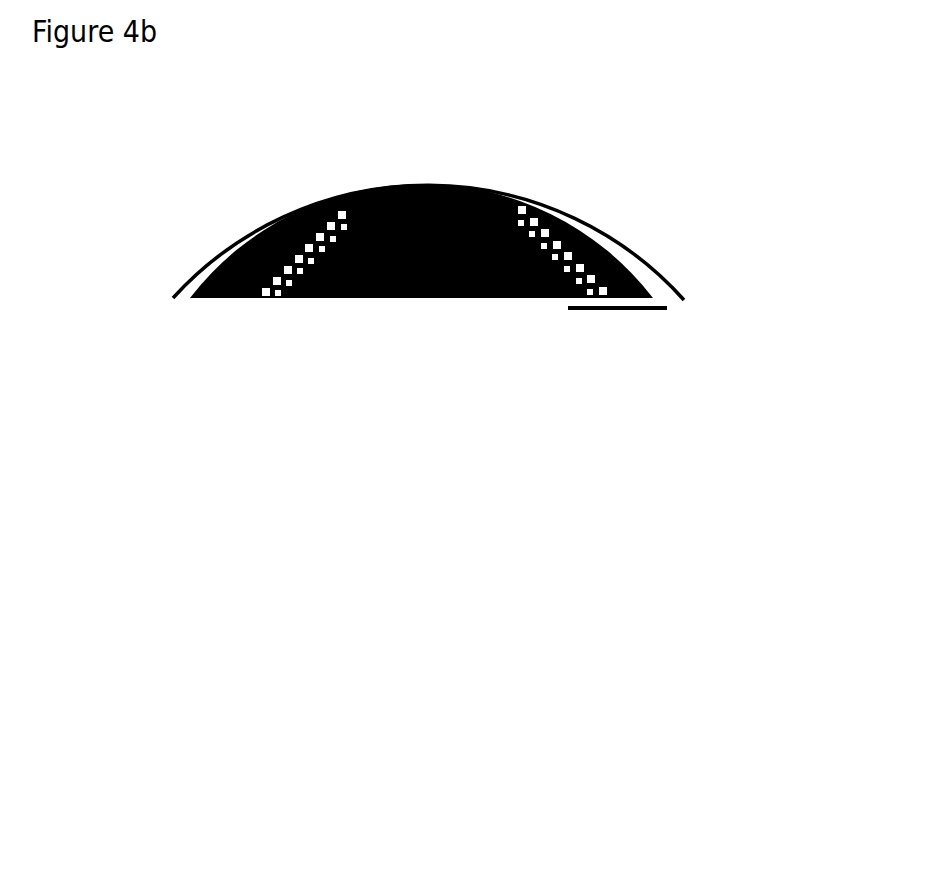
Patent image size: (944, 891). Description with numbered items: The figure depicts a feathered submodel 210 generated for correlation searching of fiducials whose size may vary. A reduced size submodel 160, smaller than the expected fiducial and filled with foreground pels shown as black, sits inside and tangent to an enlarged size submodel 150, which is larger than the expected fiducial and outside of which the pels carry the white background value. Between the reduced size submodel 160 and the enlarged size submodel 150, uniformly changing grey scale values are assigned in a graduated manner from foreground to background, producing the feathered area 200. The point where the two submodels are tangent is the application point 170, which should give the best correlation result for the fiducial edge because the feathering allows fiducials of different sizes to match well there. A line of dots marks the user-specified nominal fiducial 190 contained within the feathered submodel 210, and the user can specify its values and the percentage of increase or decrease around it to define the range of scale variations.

The enlarged size submodel 150 is at (690, 322).
The reduced size submodel 160 is at (347, 328).
The application point 170 is at (458, 168).
The nominal fiducial 190 is at (220, 326).
The feathered area 200 is at (597, 335).
The feathered submodel 210 is at (179, 205).